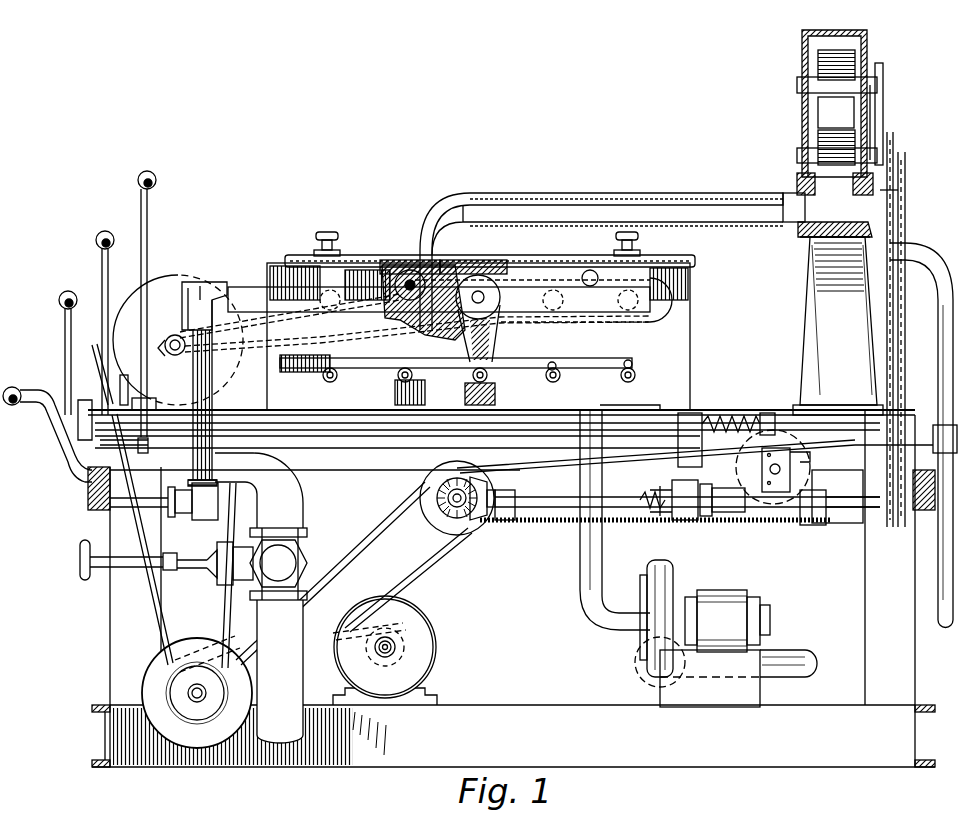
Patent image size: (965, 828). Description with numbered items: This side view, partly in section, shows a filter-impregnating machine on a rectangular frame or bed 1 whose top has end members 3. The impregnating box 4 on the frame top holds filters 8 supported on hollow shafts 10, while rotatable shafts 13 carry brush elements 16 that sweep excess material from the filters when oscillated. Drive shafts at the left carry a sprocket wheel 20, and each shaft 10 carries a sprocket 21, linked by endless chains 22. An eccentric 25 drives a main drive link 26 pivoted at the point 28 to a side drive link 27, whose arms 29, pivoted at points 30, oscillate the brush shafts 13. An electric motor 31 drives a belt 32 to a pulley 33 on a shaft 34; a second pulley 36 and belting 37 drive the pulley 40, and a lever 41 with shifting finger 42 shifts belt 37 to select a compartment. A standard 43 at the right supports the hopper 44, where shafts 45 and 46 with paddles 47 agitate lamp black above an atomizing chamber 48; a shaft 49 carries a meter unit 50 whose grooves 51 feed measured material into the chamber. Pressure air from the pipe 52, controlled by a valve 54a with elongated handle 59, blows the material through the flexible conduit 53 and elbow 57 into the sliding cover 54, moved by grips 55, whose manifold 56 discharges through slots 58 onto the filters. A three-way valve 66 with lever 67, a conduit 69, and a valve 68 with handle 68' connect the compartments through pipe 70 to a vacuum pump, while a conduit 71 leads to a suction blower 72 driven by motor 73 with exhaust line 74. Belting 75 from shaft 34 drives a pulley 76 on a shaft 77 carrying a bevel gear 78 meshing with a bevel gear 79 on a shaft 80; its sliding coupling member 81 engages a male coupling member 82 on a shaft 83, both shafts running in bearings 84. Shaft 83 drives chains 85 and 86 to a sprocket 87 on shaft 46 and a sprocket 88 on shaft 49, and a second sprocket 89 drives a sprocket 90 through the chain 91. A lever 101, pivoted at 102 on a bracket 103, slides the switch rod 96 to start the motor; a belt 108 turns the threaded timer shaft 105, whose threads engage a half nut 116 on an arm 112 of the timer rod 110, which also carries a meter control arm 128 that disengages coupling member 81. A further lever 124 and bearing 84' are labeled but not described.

The supporting frame 1 is at (905, 682).
The end members 3 is at (918, 412).
The impregnating box 4 is at (690, 334).
The filters 8 is at (425, 285).
The hollow shafts 10 is at (318, 312).
The rotatable shafts 13 is at (340, 376).
The brush element 16 is at (490, 340).
The sprocket wheel 20 is at (203, 350).
The sprocket 21 is at (370, 338).
The endless chains 22 is at (182, 290).
The eccentric 25 is at (172, 337).
The main drive link 26 is at (300, 306).
The side drive link 27 is at (421, 393).
The pivot point 28 is at (490, 383).
The arms 29 is at (400, 383).
The pivot points 30 is at (325, 372).
The electric motor 31 is at (425, 634).
The belt 32 is at (360, 548).
The pulley 33 is at (155, 680).
The shaft 34 is at (192, 698).
The second pulley 36 is at (205, 708).
The belting 37 is at (150, 613).
The pulley 40 is at (160, 287).
The lever 41 is at (95, 240).
The shifting finger 42 is at (103, 370).
The standard 43 is at (806, 334).
The hopper 44 is at (800, 60).
The shaft 45 is at (797, 86).
The shaft 46 is at (797, 155).
The paddles 47 is at (850, 60).
The atomizing chamber 48 is at (783, 205).
The shaft 49 is at (905, 178).
The meter unit 50 is at (805, 230).
The grooves 51 is at (808, 237).
The pipe 52 is at (950, 305).
The flexible conduit 53 is at (590, 193).
The air tight top 54 is at (675, 257).
The valve 54a is at (928, 440).
The handles 55 is at (326, 232).
The manifold 56 is at (500, 263).
The elbow 57 is at (430, 206).
The slots 58 is at (420, 266).
The elongated handle 59 is at (395, 433).
The three-way valve 66 is at (168, 515).
The valve handle 67 is at (48, 455).
The valve 68 is at (294, 560).
The valve handle 68' is at (137, 562).
The conduit 69 is at (290, 486).
The pipe 70 is at (312, 722).
The conduit 71 is at (578, 578).
The suction blower 72 is at (670, 576).
The electric motor 73 is at (715, 590).
The exhaust line 74 is at (798, 655).
The belting 75 is at (418, 568).
The pulley 76 is at (422, 515).
The shaft 77 is at (462, 510).
The bevel gear 78 is at (440, 520).
The bevel gear 79 is at (495, 493).
The shaft 80 is at (640, 506).
The sliding clutch 81 is at (688, 522).
The male coupling member 82 is at (730, 514).
The shaft 83 is at (855, 508).
The bearings 84 is at (655, 527).
The bearing 84' is at (905, 511).
The chain 85 is at (890, 300).
The chain 86 is at (906, 240).
The sprocket 87 is at (895, 150).
The sprocket 88 is at (906, 196).
The second sprocket 89 is at (862, 112).
The sprocket 90 is at (884, 80).
The chain 91 is at (884, 111).
The rod 96 is at (352, 440).
The lever 101 is at (156, 180).
The pivot 102 is at (135, 385).
The bracket 103 is at (150, 380).
The timer shaft 105 is at (837, 496).
The belt 108 is at (540, 467).
The rod 110 is at (645, 420).
The arm 112 is at (762, 413).
The half nut 116 is at (778, 472).
The lever 124 is at (58, 300).
The arm 128 is at (697, 462).